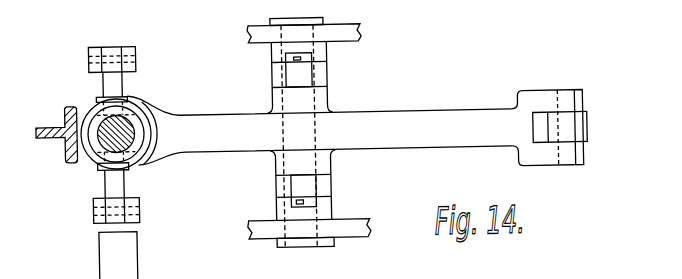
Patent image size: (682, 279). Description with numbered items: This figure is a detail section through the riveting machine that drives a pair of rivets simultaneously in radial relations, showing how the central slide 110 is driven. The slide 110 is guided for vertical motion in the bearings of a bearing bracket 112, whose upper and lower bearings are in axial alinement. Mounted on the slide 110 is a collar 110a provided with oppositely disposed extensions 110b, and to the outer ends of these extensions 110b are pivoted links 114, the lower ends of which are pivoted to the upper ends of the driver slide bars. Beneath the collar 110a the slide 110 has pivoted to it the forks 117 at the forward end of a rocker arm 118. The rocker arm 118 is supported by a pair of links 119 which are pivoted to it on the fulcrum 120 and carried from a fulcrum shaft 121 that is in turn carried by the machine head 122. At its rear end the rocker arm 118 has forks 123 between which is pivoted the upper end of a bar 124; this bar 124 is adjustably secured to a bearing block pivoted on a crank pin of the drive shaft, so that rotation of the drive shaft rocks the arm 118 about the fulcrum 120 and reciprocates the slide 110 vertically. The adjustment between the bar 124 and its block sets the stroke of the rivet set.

The central slide 110 is at (103, 145).
The collar 110a is at (143, 118).
The extensions 110b is at (112, 84).
The bearing bracket 112 is at (50, 121).
The links 114 is at (135, 48).
The forks 117 is at (143, 163).
The rocker arm 118 is at (220, 117).
The links 119 is at (320, 77).
The fulcrum 120 is at (313, 97).
The fulcrum shaft 121 is at (333, 207).
The machine head 122 is at (358, 37).
The forks 123 is at (549, 97).
The bar 124 is at (575, 137).